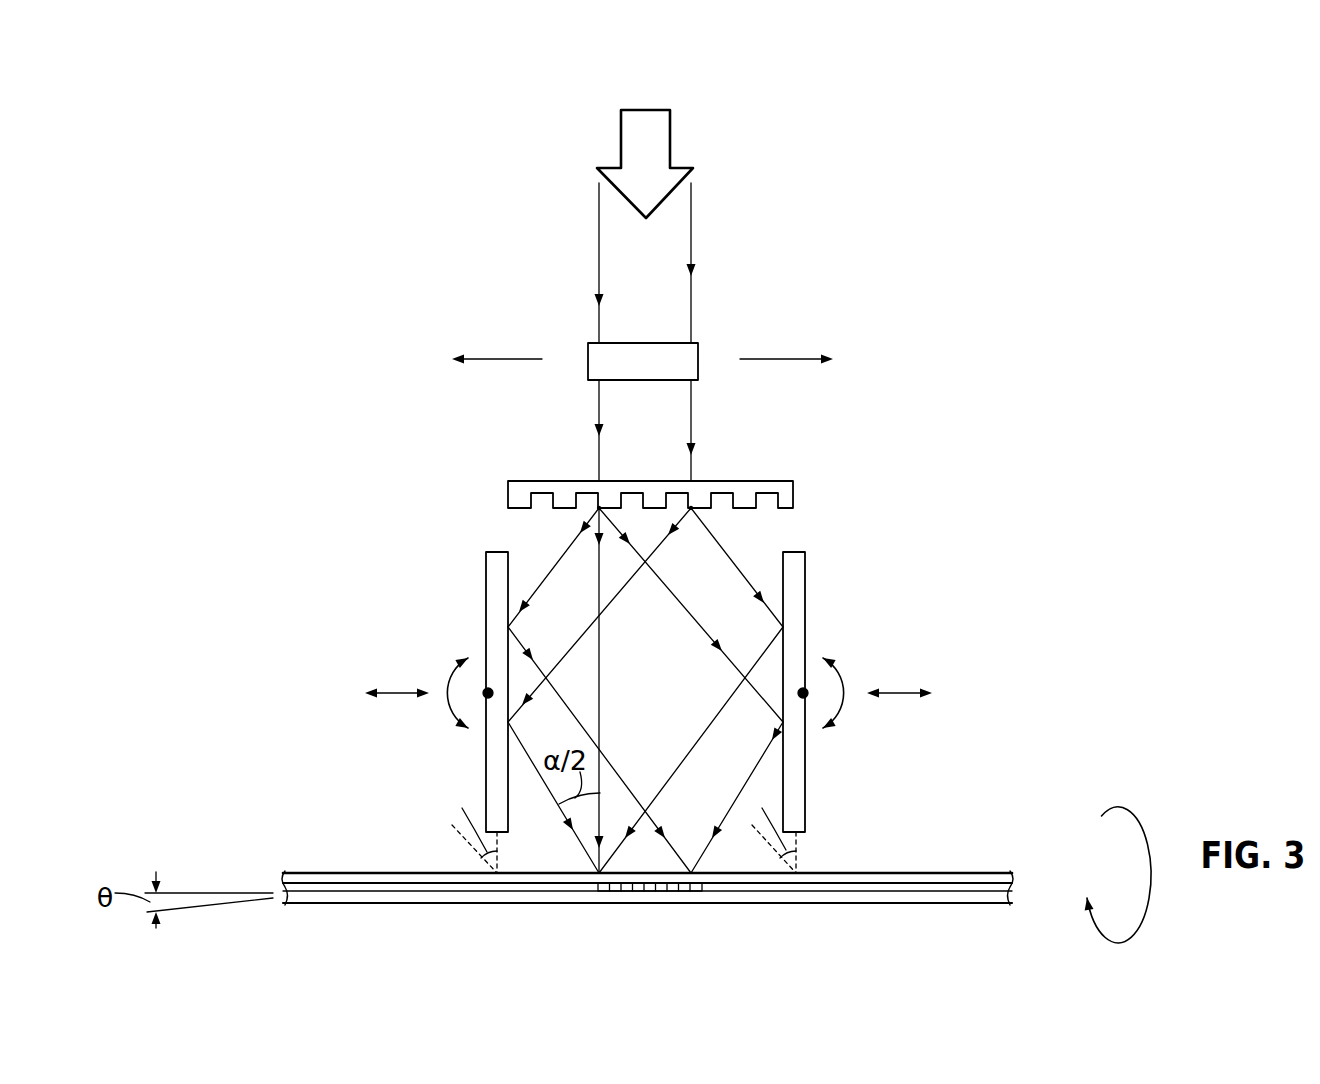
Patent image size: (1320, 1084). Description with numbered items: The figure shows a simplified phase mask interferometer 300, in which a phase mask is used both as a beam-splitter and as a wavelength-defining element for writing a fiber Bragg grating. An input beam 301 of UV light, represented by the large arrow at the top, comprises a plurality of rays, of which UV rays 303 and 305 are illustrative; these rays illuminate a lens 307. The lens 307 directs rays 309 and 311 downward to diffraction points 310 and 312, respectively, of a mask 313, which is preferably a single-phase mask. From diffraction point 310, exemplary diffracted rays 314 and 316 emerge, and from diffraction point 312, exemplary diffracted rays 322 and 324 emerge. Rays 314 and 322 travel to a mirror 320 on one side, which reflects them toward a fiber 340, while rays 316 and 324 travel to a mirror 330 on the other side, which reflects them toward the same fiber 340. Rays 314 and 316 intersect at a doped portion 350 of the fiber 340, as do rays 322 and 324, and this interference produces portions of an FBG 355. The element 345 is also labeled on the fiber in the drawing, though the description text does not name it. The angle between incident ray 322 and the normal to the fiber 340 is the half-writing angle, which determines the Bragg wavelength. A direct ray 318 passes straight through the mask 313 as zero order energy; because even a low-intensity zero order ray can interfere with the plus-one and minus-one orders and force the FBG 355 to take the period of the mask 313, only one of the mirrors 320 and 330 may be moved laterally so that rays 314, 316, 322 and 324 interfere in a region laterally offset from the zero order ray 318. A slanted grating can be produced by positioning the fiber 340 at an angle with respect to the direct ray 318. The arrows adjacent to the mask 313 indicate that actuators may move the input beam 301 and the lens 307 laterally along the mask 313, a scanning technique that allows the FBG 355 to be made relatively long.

The phase mask interferometer 300 is at (980, 241).
The input beam 301 is at (670, 134).
The UV ray 303 is at (599, 247).
The UV ray 305 is at (691, 213).
The lens 307 is at (700, 350).
The ray 309 is at (599, 453).
The ray 311 is at (691, 407).
The mask 313 is at (778, 480).
The diffraction point 310 is at (597, 509).
The diffraction point 312 is at (695, 509).
The ray 314 is at (558, 563).
The ray 316 is at (708, 633).
The direct ray 318 is at (600, 683).
The ray 322 is at (625, 587).
The ray 324 is at (722, 548).
The mirror 320 is at (485, 612).
The mirror 330 is at (805, 596).
The fiber 340 is at (631, 871).
The substrate 345 is at (283, 873).
The doped portion 350 is at (1008, 888).
The FBG 355 is at (633, 895).